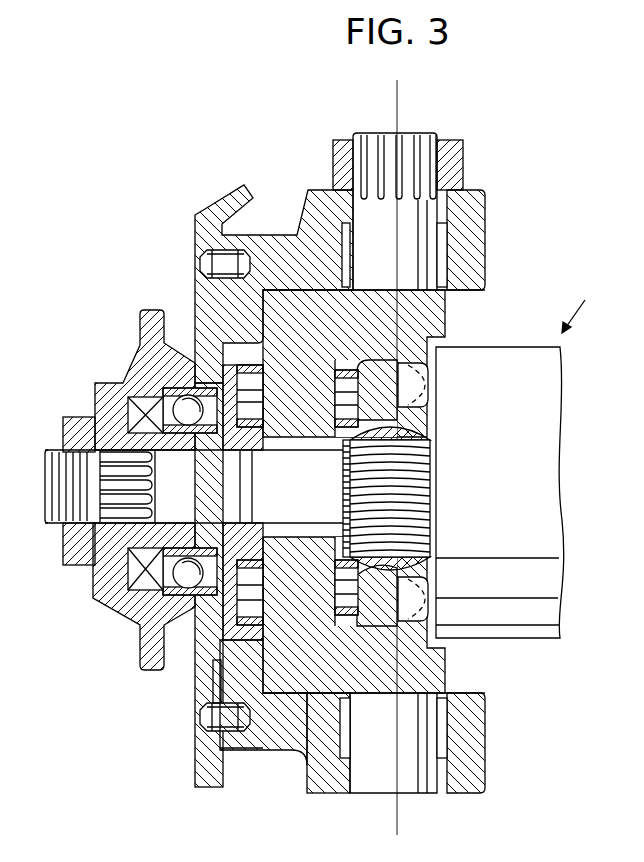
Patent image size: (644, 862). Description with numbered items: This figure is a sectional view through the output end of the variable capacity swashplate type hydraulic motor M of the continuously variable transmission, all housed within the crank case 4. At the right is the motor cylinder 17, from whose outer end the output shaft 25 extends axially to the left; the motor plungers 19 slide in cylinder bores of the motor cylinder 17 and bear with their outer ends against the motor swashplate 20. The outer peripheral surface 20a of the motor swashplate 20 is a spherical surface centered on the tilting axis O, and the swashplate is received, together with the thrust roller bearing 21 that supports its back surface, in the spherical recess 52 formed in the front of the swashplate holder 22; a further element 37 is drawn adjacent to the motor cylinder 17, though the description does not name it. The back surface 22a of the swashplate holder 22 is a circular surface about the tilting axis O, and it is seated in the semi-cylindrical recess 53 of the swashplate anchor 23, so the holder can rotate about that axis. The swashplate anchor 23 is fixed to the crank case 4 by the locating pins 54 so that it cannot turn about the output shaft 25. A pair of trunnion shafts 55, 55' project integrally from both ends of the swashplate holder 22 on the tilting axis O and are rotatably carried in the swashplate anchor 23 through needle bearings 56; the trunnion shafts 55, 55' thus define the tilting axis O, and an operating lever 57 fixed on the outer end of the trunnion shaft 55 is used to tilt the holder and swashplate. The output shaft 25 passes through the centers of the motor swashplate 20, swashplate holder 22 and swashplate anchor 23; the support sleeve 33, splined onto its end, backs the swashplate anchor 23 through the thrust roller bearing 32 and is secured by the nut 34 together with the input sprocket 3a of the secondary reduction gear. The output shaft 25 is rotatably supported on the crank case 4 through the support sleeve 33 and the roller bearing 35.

The crank case 4 is at (237, 204).
The locating pins 54 is at (200, 263).
The trunnion shaft 55 is at (401, 196).
The trunnion shaft 55' is at (393, 763).
The operating lever 57 is at (440, 163).
The needle bearings 56 is at (447, 256).
The roller bearing 35 is at (187, 403).
The nut 34 is at (77, 426).
The output shaft 25 is at (203, 498).
The support sleeve 33 is at (97, 568).
The input sprocket 3a is at (148, 628).
The back surface 22a is at (207, 682).
The semi-cylindrical recess 53 is at (203, 717).
The swashplate anchor 23 is at (256, 742).
The swashplate holder 22 is at (300, 690).
The spherical recess 52 is at (366, 618).
The thrust roller bearing 32 is at (256, 588).
The outer peripheral surface 20a is at (362, 364).
The motor swashplate 20 is at (380, 372).
The thrust roller bearing 21 is at (342, 389).
The motor plungers 19 is at (426, 385).
The pinion gear 37 is at (428, 440).
The motor cylinder 17 is at (565, 428).
The tilting axis O is at (398, 86).
The hydraulic motor M is at (578, 302).